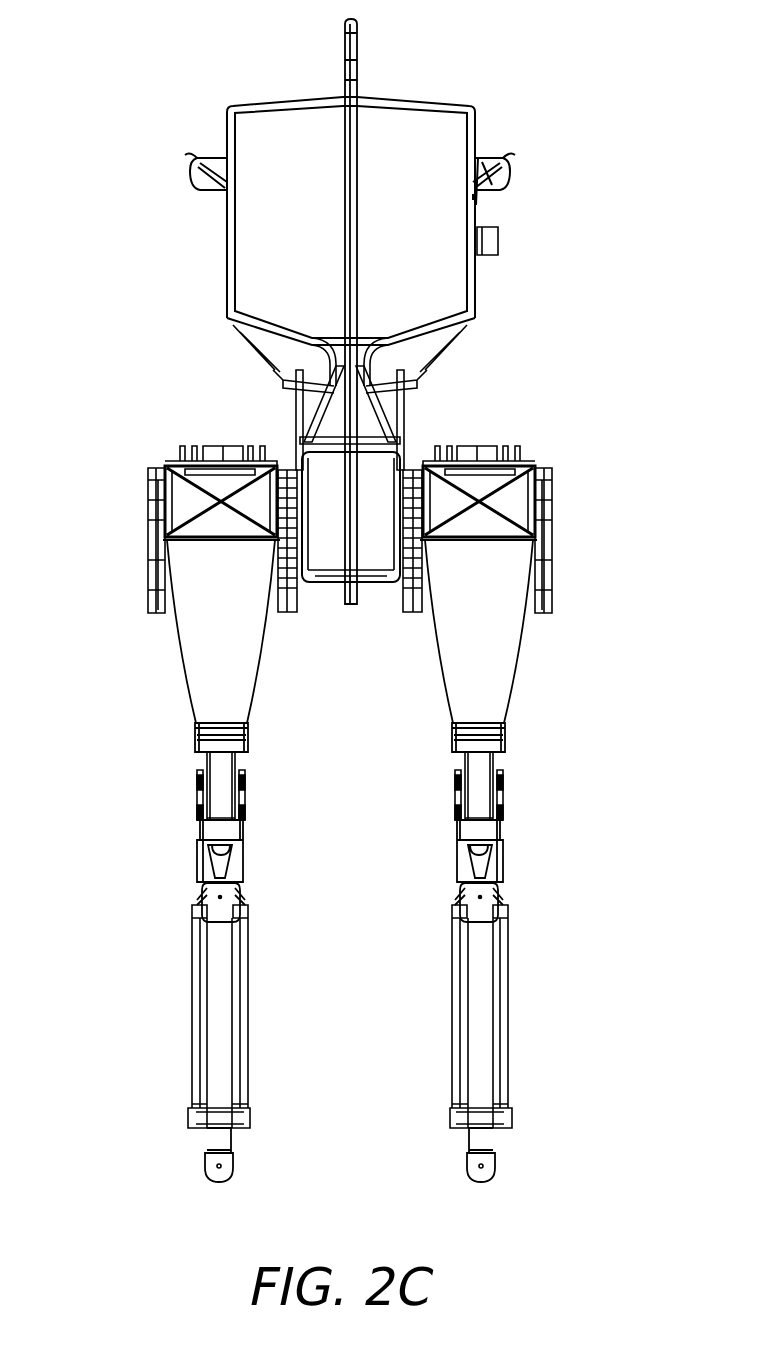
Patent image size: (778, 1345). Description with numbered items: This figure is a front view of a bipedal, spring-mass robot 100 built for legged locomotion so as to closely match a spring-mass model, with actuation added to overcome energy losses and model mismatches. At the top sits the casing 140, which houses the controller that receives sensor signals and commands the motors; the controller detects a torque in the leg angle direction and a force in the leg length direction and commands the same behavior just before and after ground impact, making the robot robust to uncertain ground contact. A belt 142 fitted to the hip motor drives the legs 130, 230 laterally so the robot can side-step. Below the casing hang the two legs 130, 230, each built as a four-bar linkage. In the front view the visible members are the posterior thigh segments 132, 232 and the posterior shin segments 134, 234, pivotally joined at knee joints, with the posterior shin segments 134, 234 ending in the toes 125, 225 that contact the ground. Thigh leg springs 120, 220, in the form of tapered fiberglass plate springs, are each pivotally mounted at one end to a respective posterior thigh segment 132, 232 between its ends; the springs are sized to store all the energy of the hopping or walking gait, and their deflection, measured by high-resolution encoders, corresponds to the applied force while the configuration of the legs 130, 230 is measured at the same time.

The bipedal robot 100 is at (519, 98).
The casing 140 is at (452, 290).
The belt 142 is at (216, 178).
The thigh leg spring 220 is at (243, 665).
The thigh leg spring 120 is at (493, 664).
The leg 230 is at (182, 908).
The leg 130 is at (545, 876).
The posterior thigh segment 232 is at (214, 797).
The posterior thigh segment 132 is at (503, 768).
The posterior shin segment 234 is at (238, 1070).
The posterior shin segment 134 is at (492, 1073).
The toe 225 is at (232, 1172).
The toe 125 is at (505, 1172).